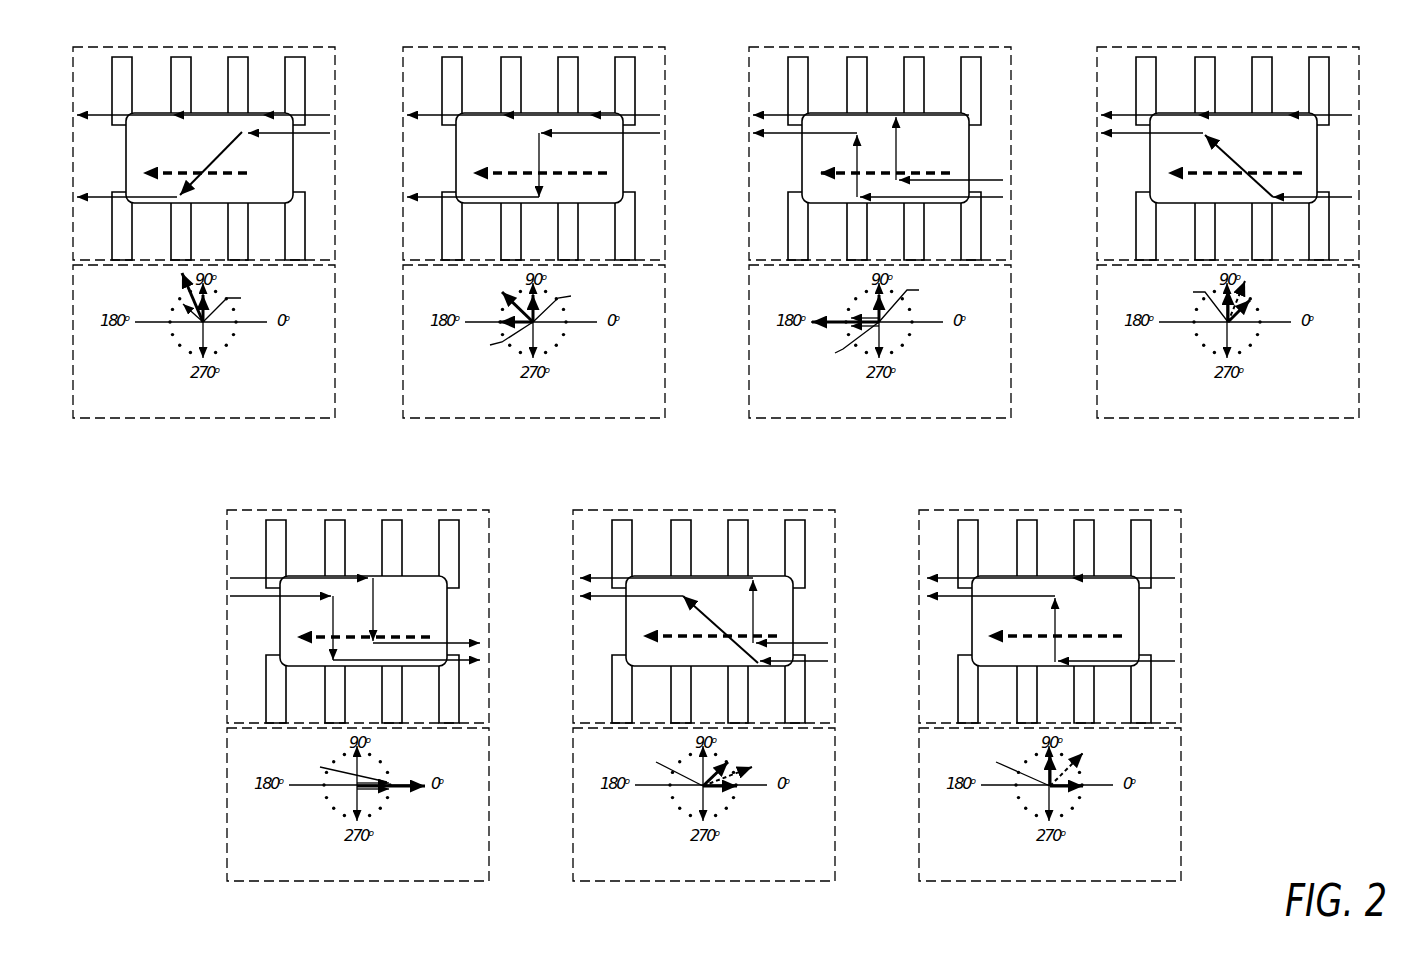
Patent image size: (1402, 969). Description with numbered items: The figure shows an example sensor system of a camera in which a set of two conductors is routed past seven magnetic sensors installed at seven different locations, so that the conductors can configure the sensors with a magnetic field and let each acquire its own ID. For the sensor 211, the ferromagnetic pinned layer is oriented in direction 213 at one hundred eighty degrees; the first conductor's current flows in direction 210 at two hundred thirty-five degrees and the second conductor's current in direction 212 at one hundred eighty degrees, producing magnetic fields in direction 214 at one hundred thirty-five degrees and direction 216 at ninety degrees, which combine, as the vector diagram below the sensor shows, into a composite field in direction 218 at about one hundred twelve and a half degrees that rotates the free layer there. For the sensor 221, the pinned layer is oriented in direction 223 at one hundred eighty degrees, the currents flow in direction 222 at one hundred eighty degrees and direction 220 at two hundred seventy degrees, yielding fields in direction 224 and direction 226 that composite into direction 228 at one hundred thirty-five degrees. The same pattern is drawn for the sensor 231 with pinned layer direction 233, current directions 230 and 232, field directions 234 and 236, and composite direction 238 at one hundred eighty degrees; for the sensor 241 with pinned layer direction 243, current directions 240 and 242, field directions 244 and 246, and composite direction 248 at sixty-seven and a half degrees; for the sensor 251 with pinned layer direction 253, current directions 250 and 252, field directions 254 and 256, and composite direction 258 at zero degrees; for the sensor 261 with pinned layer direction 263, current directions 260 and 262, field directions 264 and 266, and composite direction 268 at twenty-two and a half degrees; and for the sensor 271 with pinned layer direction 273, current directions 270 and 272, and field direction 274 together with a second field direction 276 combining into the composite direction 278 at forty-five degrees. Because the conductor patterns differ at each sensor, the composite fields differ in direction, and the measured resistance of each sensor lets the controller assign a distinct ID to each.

The sensor 211 is at (147, 45).
The current direction of first conductor 210 is at (231, 153).
The current direction of second conductor 212 is at (183, 116).
The pinned layer direction 213 is at (192, 171).
The magnetic field direction 214 is at (176, 300).
The magnetic field direction 216 is at (239, 304).
The composite magnetic field direction 218 is at (176, 279).
The sensor 221 is at (477, 45).
The current direction of second conductor 220 is at (540, 152).
The current direction of first conductor 222 is at (522, 116).
The pinned layer direction 223 is at (522, 171).
The magnetic field direction 224 is at (493, 338).
The magnetic field direction 226 is at (569, 302).
The composite magnetic field direction 228 is at (499, 294).
The sensor 231 is at (823, 45).
The current direction 230 is at (858, 143).
The current direction 232 is at (898, 126).
The pinned layer direction 233 is at (850, 171).
The magnetic field direction 234 is at (841, 341).
The magnetic field direction 236 is at (915, 300).
The composite magnetic field direction 238 is at (833, 316).
The sensor 241 is at (1171, 45).
The current direction 240 is at (1230, 155).
The current direction 242 is at (1227, 116).
The pinned layer direction 243 is at (1203, 171).
The magnetic field direction 244 is at (1257, 307).
The magnetic field direction 246 is at (1193, 300).
The composite magnetic field direction 248 is at (1252, 286).
The sensor 251 is at (301, 508).
The current direction 250 is at (335, 605).
The current direction 252 is at (375, 600).
The pinned layer direction 253 is at (327, 635).
The magnetic field direction 254 is at (372, 792).
The magnetic field direction 256 is at (336, 767).
The composite magnetic field direction 258 is at (412, 785).
The sensor 261 is at (647, 508).
The current direction 260 is at (694, 604).
The current direction 262 is at (757, 604).
The pinned layer direction 263 is at (675, 634).
The magnetic field direction 264 is at (662, 767).
The magnetic field direction 266 is at (718, 790).
The composite magnetic field direction 268 is at (752, 768).
The sensor 271 is at (993, 508).
The current direction 270 is at (1057, 643).
The current direction 272 is at (1063, 582).
The pinned layer direction 273 is at (1025, 634).
The magnetic field direction 274 is at (1063, 790).
The field direction vector of sensor 271 276 is at (1006, 767).
The free layer angle vector of sensor 271 278 is at (1084, 756).